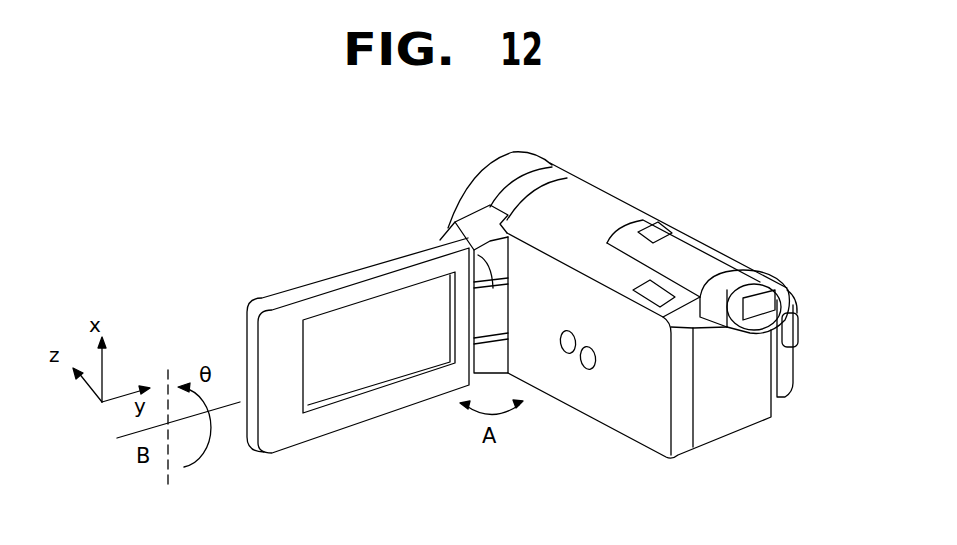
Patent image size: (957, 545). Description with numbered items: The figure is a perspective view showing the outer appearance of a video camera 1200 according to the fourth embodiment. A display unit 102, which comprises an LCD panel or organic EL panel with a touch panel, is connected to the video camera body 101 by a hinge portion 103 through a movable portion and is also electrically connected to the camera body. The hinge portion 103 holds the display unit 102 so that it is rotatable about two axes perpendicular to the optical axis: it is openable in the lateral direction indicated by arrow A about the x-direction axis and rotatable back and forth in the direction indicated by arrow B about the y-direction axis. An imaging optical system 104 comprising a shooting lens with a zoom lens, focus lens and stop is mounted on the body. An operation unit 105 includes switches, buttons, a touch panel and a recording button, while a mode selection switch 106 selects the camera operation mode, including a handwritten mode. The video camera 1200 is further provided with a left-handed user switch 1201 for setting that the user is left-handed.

The video camera 1200 is at (612, 157).
The video camera body 101 is at (655, 445).
The display unit 102 is at (352, 287).
The hinge portion 103 is at (452, 221).
The imaging optical system 104 is at (496, 158).
The operation unit 105 is at (802, 300).
The mode selection switch 106 is at (570, 354).
The left-handed user switch 1201 is at (590, 370).